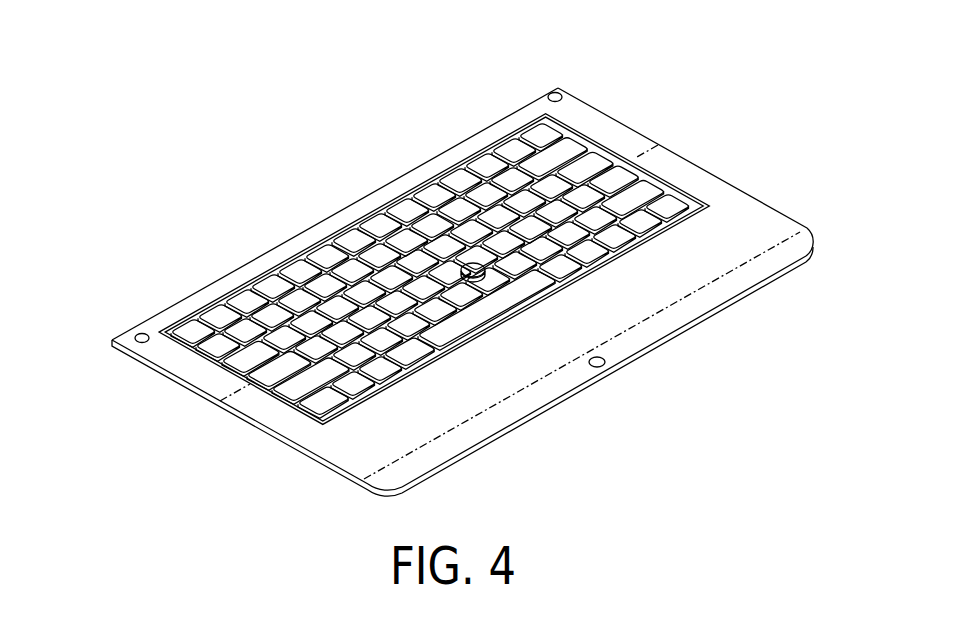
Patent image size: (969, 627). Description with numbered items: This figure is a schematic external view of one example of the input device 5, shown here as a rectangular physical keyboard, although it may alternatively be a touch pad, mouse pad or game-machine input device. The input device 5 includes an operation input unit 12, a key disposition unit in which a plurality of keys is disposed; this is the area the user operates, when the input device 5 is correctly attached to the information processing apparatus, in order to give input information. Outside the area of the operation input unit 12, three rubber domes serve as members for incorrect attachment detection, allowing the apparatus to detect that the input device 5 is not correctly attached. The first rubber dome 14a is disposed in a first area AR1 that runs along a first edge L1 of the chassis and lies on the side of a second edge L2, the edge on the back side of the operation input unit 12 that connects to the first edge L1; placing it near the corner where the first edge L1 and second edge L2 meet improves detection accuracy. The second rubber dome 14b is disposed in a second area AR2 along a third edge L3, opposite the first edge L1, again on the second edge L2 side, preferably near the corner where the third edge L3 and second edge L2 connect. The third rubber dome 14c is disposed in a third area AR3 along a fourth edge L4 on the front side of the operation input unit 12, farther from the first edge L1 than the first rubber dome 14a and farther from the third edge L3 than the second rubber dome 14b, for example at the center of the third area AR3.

The input device 5 is at (322, 150).
The operation input unit 12 is at (659, 170).
The first rubber dome 14a is at (140, 333).
The second rubber dome 14b is at (552, 94).
The third rubber dome 14c is at (607, 367).
The first edge L1 is at (243, 413).
The second edge L2 is at (500, 117).
The third edge L3 is at (728, 183).
The fourth edge L4 is at (708, 308).
The first area AR1 is at (170, 360).
The second area AR2 is at (612, 130).
The third area AR3 is at (795, 250).